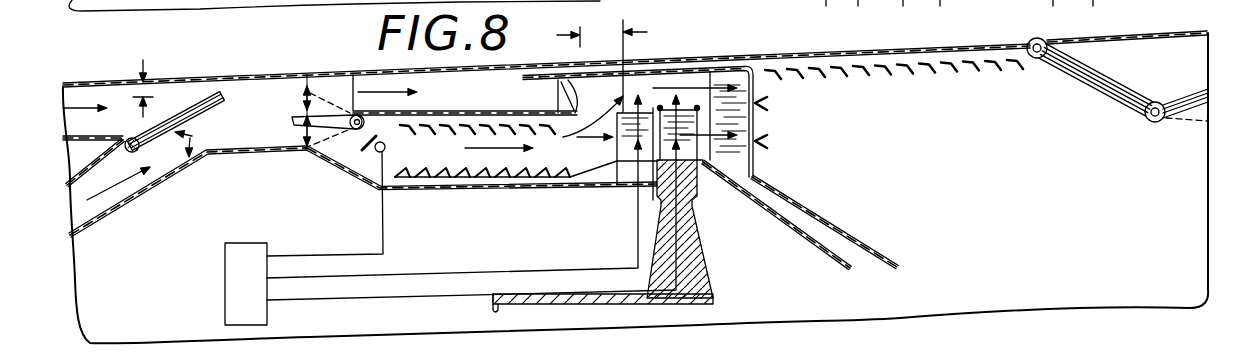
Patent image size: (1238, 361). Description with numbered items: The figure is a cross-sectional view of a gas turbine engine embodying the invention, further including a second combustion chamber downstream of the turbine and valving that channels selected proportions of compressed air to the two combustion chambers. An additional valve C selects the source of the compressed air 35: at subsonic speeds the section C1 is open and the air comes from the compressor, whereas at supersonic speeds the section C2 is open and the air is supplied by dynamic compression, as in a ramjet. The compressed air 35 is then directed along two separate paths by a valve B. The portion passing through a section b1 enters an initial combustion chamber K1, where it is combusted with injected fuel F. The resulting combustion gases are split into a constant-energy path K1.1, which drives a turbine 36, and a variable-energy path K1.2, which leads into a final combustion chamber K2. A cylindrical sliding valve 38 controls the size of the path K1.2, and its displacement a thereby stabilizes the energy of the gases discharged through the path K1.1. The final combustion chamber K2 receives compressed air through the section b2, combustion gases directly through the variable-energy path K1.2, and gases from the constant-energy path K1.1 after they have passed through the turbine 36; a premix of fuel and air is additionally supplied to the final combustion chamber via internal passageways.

The compressed air 35 is at (258, 135).
The turbine 36 is at (695, 258).
The cylindrical sliding valve 38 is at (568, 80).
The valve B is at (346, 112).
The additional valve C is at (185, 107).
The section C1 is at (196, 140).
The section C2 is at (138, 78).
The section b1 is at (304, 150).
The section b2 is at (300, 100).
The initial combustion chamber K1 is at (428, 167).
The constant-energy path K1.1 is at (608, 161).
The variable-energy path K1.2 is at (678, 84).
The final combustion chamber K2 is at (803, 124).
The fuel F is at (326, 196).
The spacing a is at (602, 65).